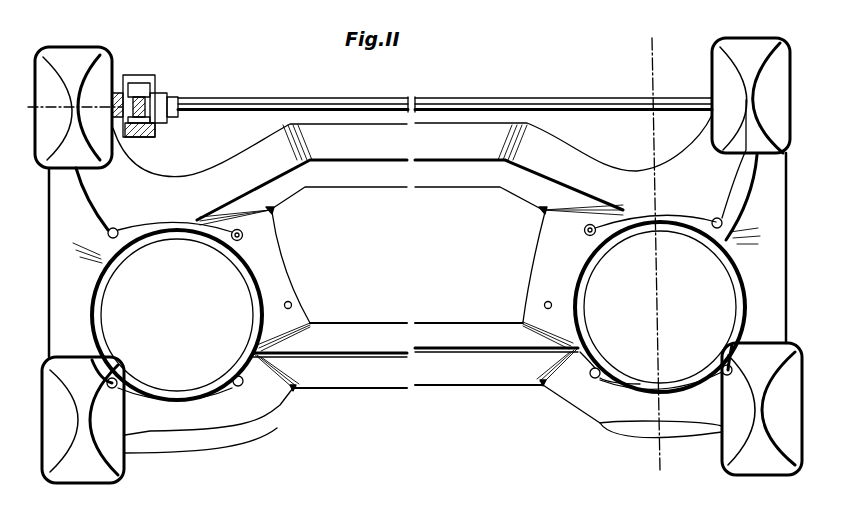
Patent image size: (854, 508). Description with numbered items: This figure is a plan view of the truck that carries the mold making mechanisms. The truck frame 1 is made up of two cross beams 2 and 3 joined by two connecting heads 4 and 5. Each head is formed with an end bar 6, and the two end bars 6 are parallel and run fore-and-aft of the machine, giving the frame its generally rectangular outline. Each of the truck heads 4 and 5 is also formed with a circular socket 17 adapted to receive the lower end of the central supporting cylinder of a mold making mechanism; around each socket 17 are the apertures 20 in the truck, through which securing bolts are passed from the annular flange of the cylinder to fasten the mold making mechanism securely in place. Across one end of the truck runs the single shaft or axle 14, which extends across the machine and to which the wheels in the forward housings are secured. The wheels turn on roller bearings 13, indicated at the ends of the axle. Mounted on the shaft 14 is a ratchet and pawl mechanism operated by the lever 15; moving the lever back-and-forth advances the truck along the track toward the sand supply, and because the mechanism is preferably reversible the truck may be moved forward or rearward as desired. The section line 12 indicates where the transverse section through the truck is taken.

The truck frame 1 is at (418, 311).
The cross beam 2 is at (412, 167).
The cross beam 3 is at (415, 356).
The connecting head 4 is at (283, 267).
The connecting head 5 is at (538, 267).
The end bar 6 is at (60, 258).
The section line 12- 12 is at (658, 50).
The roller bearings 13 is at (62, 100).
The shaft or axle 14 is at (307, 97).
The lever 15 is at (140, 88).
The circular socket 17 is at (418, 307).
The apertures 20 is at (273, 212).